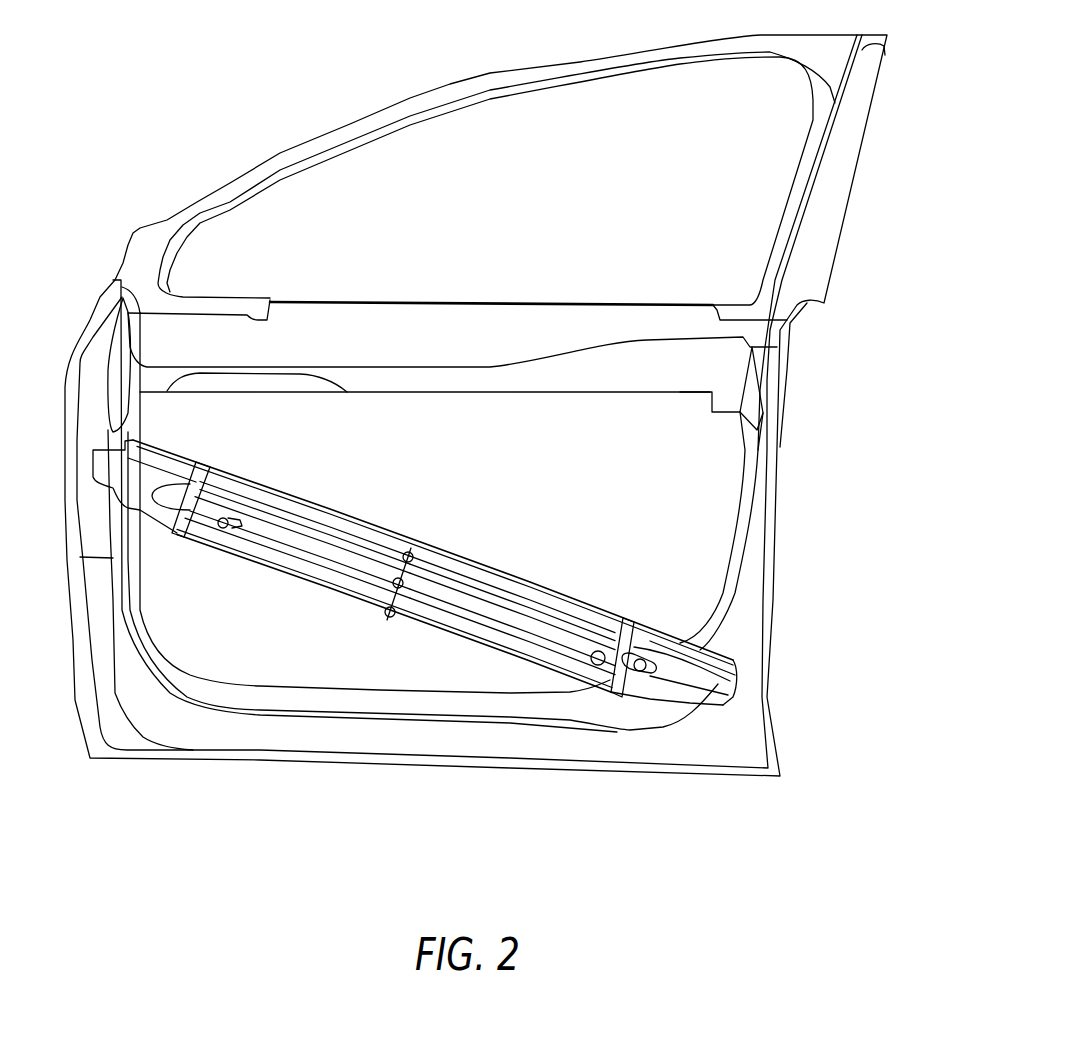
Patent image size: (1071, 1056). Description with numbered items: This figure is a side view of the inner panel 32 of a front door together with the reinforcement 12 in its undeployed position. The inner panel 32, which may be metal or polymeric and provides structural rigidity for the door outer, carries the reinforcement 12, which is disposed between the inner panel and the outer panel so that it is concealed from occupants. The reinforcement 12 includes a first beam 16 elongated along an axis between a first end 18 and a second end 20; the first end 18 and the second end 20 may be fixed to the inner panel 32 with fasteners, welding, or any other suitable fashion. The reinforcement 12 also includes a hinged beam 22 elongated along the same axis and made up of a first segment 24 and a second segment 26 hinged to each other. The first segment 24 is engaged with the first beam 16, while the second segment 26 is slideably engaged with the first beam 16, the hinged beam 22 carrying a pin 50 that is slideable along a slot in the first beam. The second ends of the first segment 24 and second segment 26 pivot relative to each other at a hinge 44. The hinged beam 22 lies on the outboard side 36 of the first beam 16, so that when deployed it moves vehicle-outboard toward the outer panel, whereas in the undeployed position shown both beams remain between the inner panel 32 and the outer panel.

The reinforcement 12 is at (299, 641).
The first beam 16 is at (152, 527).
The first end 18 is at (200, 464).
The second end 20 is at (404, 552).
The hinged beam 22 is at (496, 631).
The first segment 24 is at (514, 594).
The second segment 26 is at (313, 523).
The inner panel 32 is at (813, 267).
The outboard side 36 is at (687, 678).
The hinge 44 is at (388, 618).
The pin 50 is at (225, 518).